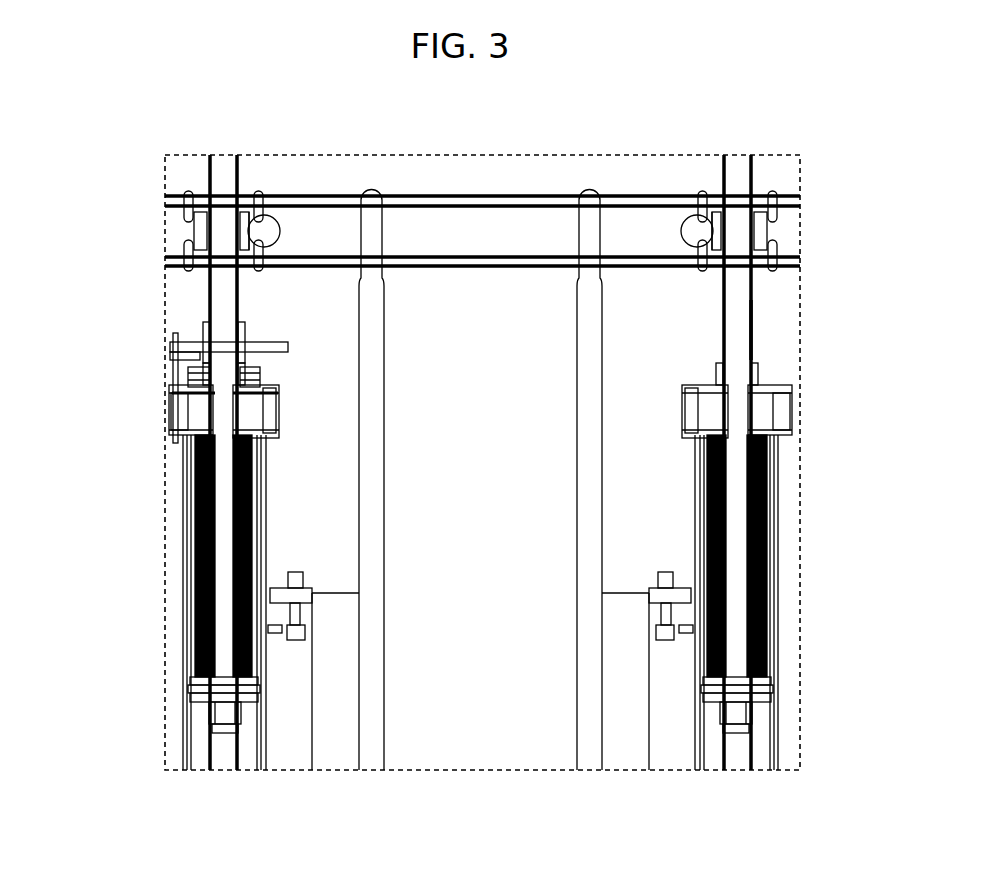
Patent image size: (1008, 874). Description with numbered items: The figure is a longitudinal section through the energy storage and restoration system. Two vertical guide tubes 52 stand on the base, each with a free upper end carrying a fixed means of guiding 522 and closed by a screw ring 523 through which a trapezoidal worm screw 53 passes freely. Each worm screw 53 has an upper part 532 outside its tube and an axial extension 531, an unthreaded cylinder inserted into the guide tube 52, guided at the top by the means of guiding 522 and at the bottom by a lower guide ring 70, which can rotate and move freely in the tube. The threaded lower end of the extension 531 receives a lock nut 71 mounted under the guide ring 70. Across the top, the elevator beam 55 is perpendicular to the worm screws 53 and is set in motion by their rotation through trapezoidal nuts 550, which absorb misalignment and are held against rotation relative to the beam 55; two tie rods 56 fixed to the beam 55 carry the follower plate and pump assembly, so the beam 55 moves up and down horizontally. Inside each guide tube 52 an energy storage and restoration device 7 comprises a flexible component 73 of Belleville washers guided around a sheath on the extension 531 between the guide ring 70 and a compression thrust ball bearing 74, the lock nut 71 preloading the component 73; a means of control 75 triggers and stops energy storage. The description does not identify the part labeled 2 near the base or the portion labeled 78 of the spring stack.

The base frame 2 is at (652, 747).
The energy storage and restoration device 7 is at (151, 584).
The vertical guide tube 52 is at (790, 458).
The worm screw 53 is at (740, 290).
The lower beam 55 is at (628, 189).
The tie rod 56 is at (378, 558).
The lower guide ring 70 is at (185, 697).
The lock nut 71 is at (227, 774).
The flexible component 73 is at (195, 550).
The compression thrust ball bearing 74 is at (173, 435).
The means of control 75 is at (163, 323).
The lower rod portion 78 is at (200, 650).
The means of guiding 522 is at (797, 410).
The screw ring 523 is at (278, 413).
The axial extension 531 is at (735, 500).
The upper part of worm screw 532 is at (757, 325).
The trapezoidal nut 550 is at (190, 232).